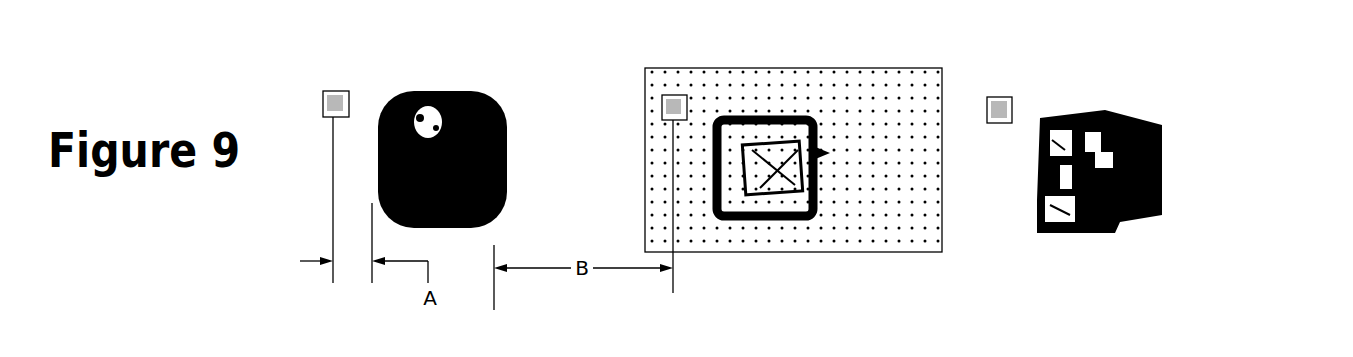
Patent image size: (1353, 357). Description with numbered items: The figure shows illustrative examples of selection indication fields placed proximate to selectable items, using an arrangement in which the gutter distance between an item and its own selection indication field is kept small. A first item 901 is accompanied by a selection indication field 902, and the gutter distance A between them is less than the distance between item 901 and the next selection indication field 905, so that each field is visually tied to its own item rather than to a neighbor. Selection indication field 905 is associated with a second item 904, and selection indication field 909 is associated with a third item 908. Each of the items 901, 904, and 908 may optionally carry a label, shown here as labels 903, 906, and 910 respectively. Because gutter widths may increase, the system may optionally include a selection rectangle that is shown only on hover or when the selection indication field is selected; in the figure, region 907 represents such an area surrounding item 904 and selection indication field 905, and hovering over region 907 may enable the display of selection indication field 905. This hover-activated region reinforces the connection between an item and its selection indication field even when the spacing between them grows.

The item 901 is at (470, 105).
The selection indication field 902 is at (340, 90).
The label 903 is at (557, 143).
The item 904 is at (785, 113).
The selection indication field 905 is at (678, 93).
The label 906 is at (907, 178).
The region 907 is at (848, 252).
The item 908 is at (1100, 107).
The selection indication field 909 is at (1000, 97).
The label 910 is at (1222, 153).